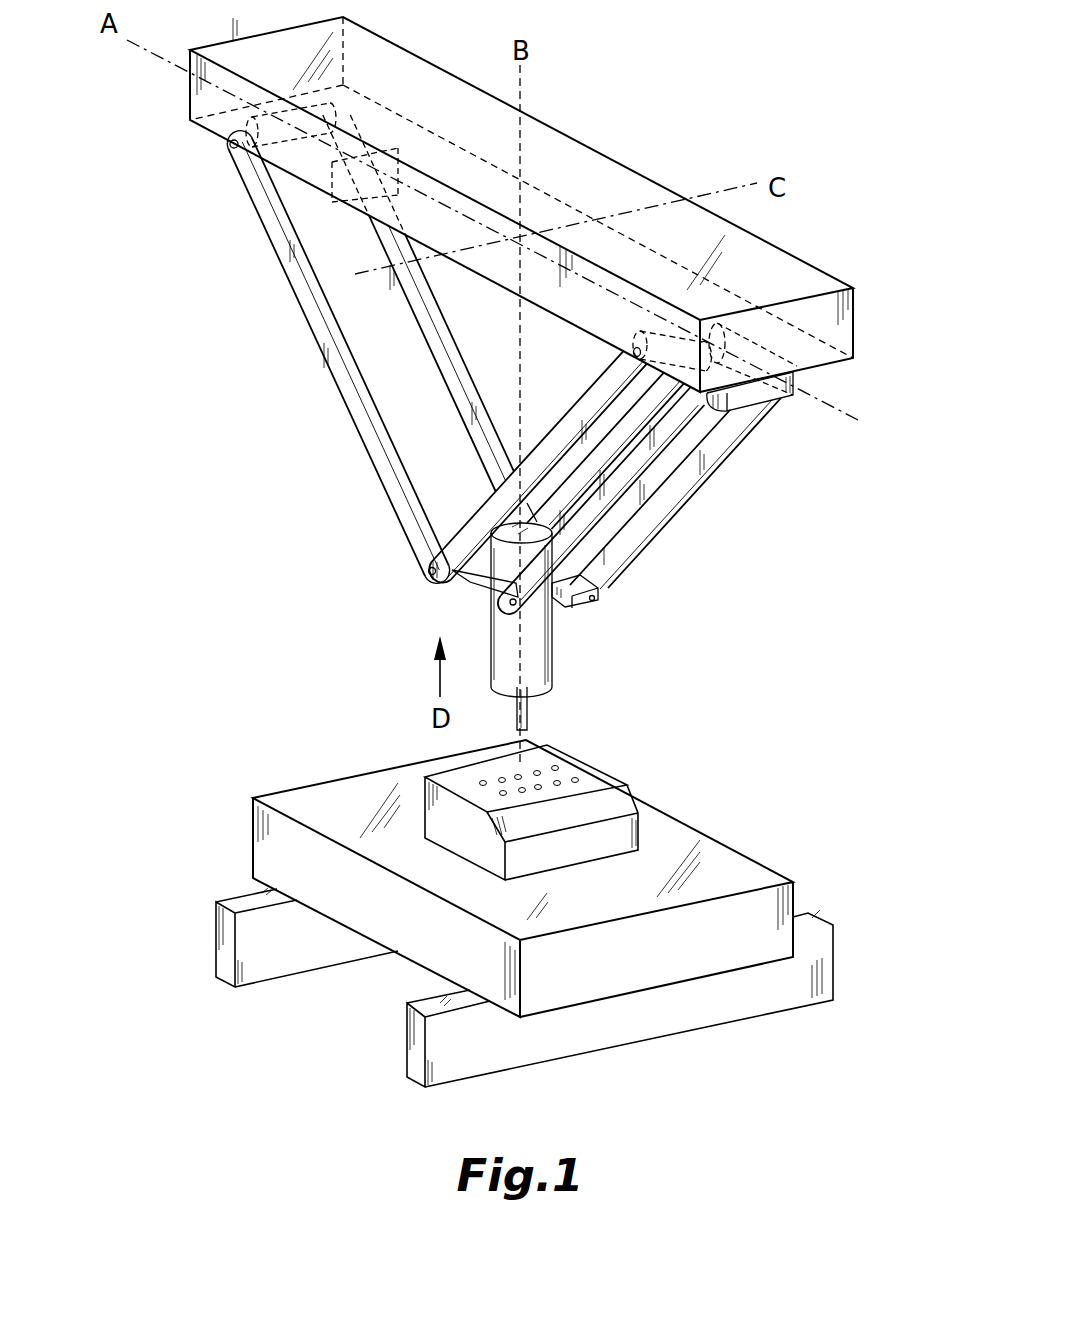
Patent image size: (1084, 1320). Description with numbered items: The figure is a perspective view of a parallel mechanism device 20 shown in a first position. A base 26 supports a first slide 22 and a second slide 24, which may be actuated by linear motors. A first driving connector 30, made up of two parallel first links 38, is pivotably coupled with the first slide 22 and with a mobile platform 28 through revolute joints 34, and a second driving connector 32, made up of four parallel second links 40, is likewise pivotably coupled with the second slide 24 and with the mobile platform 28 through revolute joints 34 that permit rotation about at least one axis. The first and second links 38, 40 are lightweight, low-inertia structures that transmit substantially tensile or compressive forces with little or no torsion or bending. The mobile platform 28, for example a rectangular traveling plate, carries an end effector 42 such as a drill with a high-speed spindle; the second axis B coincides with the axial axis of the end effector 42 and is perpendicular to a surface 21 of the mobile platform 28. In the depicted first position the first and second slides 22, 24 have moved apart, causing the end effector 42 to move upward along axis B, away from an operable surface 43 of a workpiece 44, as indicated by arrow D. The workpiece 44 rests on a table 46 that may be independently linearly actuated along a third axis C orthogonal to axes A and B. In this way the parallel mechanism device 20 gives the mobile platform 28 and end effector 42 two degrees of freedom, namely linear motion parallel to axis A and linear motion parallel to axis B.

The parallel mechanism device 20 is at (852, 516).
The surface of the mobile platform 21 is at (607, 580).
The first slide 22 is at (297, 165).
The second slide 24 is at (758, 407).
The base 26 is at (805, 280).
The mobile platform 28 is at (558, 606).
The first driving connector 30 is at (283, 314).
The second driving connector 32 is at (714, 523).
The revolute joints 34 is at (229, 143).
The first links 38 is at (437, 347).
The second links 40 is at (582, 418).
The end effector 42 is at (530, 680).
The operable surface 43 is at (453, 777).
The workpiece 44 is at (607, 775).
The table 46 is at (728, 867).